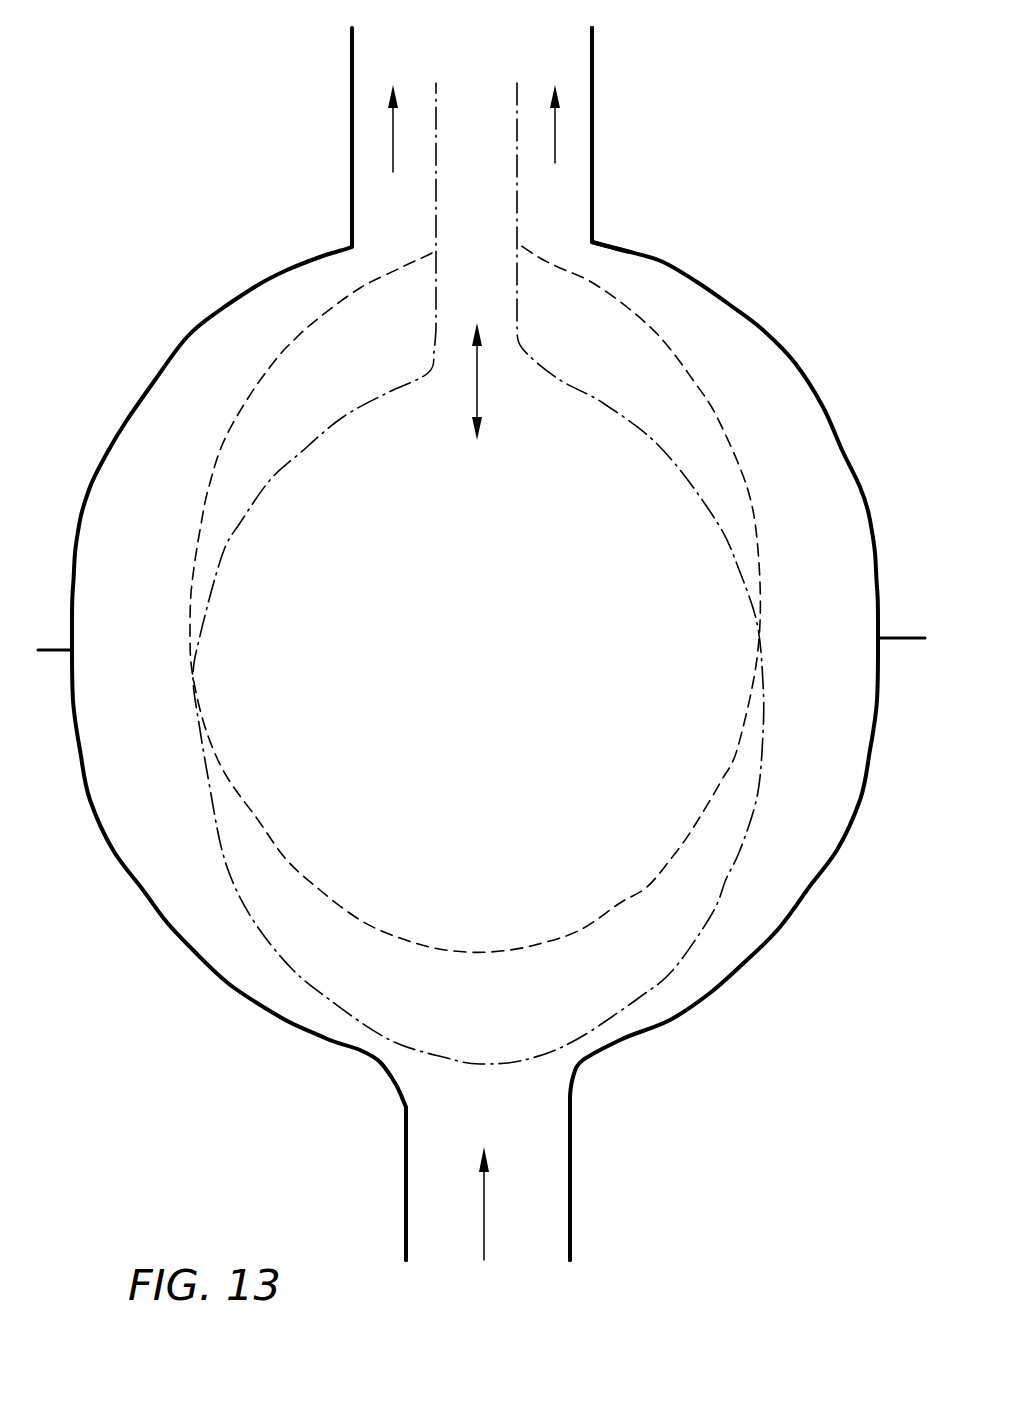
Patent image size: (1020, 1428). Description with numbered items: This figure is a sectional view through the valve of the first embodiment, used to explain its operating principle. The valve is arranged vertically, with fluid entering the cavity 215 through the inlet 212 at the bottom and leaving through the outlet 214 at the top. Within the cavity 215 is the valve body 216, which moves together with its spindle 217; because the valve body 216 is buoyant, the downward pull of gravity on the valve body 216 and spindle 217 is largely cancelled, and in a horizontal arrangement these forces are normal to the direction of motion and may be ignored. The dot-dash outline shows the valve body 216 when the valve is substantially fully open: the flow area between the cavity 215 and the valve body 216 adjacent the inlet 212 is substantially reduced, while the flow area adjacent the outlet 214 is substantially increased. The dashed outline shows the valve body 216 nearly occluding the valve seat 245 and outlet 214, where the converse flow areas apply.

The inlet 212 is at (541, 1195).
The outlet 214 is at (572, 71).
The cavity 215 is at (790, 465).
The valve body 216 is at (230, 778).
The spindle 217 is at (475, 153).
The valve seat 245 is at (598, 240).